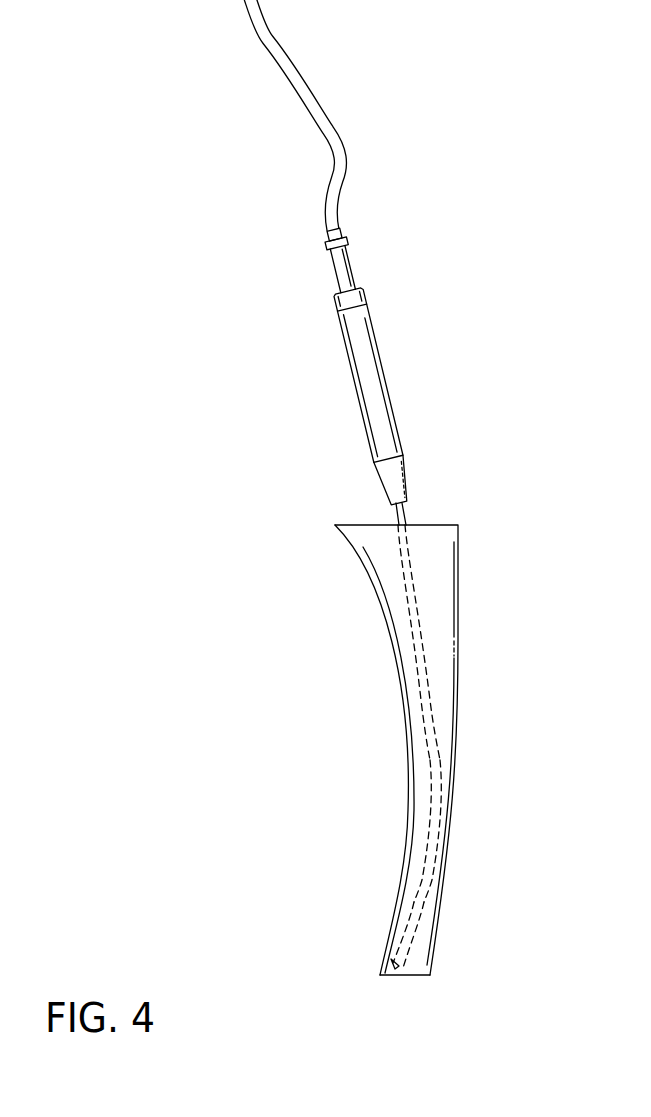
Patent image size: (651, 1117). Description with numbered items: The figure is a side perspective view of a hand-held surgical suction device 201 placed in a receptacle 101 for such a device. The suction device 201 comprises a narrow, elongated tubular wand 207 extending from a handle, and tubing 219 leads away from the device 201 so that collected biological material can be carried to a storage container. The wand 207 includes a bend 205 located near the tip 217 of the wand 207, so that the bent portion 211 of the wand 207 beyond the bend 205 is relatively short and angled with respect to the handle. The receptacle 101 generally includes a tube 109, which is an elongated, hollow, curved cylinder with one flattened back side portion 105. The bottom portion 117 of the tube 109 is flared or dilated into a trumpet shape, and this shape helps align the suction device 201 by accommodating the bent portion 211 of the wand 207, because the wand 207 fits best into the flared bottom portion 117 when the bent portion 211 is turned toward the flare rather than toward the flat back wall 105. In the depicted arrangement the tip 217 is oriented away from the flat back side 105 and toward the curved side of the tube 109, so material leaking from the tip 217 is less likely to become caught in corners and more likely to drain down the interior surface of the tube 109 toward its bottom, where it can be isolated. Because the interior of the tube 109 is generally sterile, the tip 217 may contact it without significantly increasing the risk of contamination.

The tubing 219 is at (275, 45).
The suction device 201 is at (382, 365).
The receptacle 101 is at (460, 563).
The tube 109 is at (387, 565).
The flattened back side portion 105 is at (455, 770).
The wand 207 is at (430, 673).
The bend 205 is at (435, 833).
The bent portion 211 is at (412, 920).
The bottom portion 117 is at (397, 855).
The tip 217 is at (388, 972).